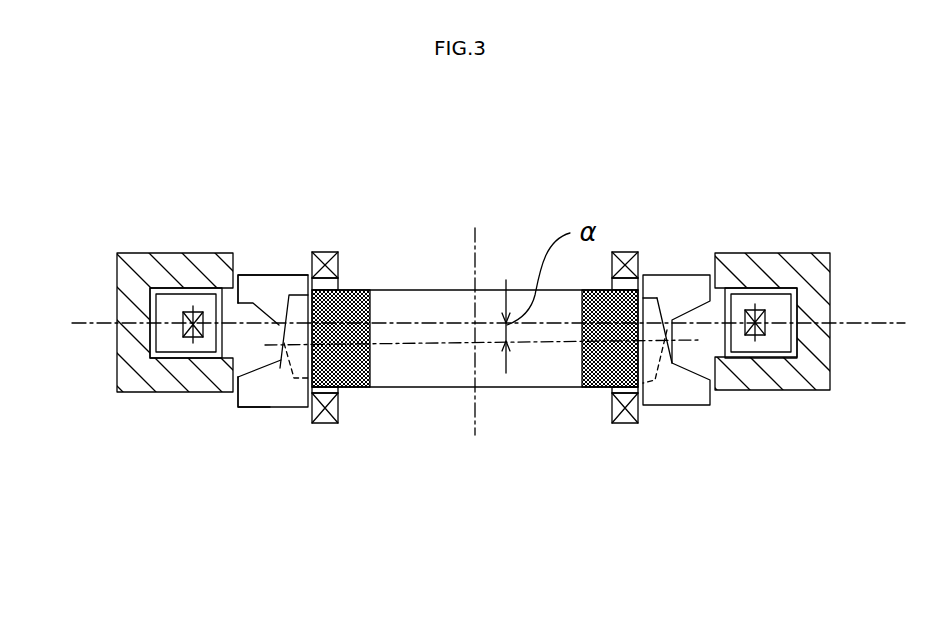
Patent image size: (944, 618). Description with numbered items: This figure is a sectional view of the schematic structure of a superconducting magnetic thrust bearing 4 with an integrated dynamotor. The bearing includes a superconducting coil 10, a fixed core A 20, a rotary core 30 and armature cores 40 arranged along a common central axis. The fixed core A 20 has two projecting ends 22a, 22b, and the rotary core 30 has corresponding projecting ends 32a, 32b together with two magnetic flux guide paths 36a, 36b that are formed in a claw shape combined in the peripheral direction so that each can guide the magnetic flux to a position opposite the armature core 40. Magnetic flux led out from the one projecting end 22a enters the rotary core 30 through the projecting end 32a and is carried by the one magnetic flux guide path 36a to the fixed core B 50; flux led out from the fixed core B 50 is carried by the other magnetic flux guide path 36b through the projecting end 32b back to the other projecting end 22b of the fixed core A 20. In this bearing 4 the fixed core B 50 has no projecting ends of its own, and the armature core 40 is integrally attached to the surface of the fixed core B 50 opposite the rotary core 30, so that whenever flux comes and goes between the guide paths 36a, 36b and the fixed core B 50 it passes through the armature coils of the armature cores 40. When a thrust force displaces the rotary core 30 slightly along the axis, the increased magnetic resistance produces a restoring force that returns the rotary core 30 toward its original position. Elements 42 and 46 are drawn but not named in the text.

The superconducting magnetic thrust bearing 4 is at (542, 215).
The superconducting coil 10 is at (190, 310).
The fixed core A 20 is at (117, 277).
The projecting end 22a is at (240, 275).
The projecting end 22b is at (244, 407).
The rotary core 30 is at (283, 410).
The projecting end 32a is at (262, 275).
The projecting end 32b is at (270, 408).
The magnetic flux guide path 36a is at (280, 365).
The magnetic flux guide path 36b is at (297, 385).
The armature core 40 is at (348, 278).
The bearing 42 is at (325, 252).
The magnet 46 is at (337, 386).
The fixed core B 50 is at (357, 345).